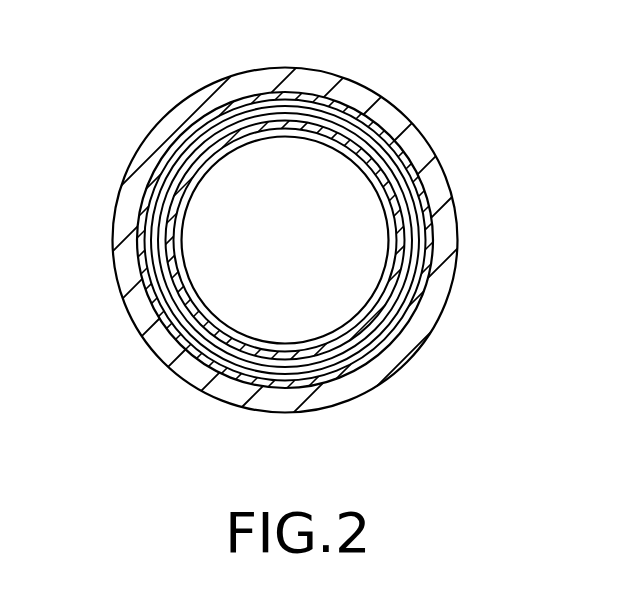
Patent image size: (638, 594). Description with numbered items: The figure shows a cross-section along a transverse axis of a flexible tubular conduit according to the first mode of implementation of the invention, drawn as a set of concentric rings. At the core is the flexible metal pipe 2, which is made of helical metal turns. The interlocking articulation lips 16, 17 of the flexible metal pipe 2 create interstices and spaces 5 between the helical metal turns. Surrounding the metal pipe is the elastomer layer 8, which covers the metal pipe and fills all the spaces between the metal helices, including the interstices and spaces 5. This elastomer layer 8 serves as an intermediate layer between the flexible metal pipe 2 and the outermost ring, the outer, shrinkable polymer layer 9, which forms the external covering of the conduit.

The flexible metal pipe 2 is at (217, 127).
The interstices and spaces 5 is at (363, 330).
The elastomer layer 8 is at (162, 217).
The shrinkable polymer layer 9 is at (350, 95).
The interlocking articulation lip 16 is at (438, 182).
The interlocking articulation lip 17 is at (172, 330).